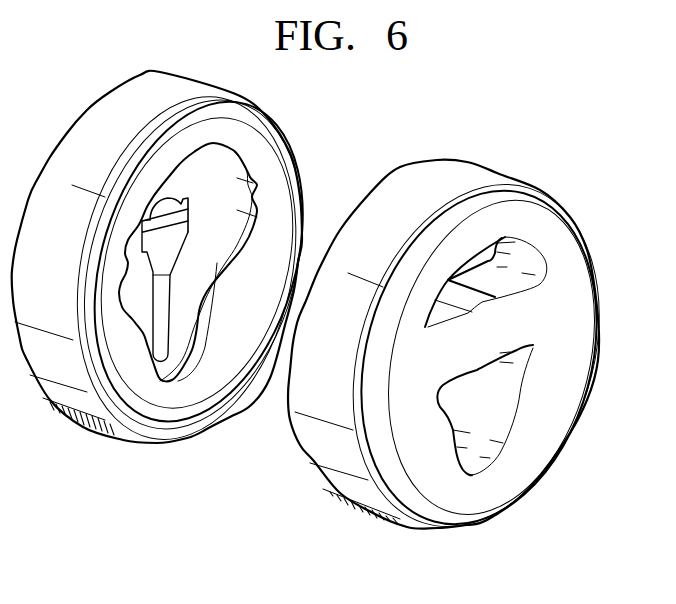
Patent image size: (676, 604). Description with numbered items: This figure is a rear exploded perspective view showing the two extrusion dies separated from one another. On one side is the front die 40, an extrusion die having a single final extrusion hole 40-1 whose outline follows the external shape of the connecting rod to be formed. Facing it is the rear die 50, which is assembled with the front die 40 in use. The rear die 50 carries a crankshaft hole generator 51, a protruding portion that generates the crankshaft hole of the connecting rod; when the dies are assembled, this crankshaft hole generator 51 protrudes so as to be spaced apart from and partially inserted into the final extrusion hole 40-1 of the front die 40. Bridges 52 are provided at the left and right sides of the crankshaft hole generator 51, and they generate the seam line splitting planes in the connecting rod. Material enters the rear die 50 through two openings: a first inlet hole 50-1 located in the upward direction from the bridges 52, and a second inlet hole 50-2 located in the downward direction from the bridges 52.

The front die 40 is at (170, 423).
The final extrusion hole 40-1 is at (158, 290).
The rear die 50 is at (355, 497).
The first inlet hole 50-1 is at (510, 277).
The second inlet hole 50-2 is at (497, 410).
The crankshaft hole generator 51 is at (497, 325).
The bridges 52 is at (533, 308).